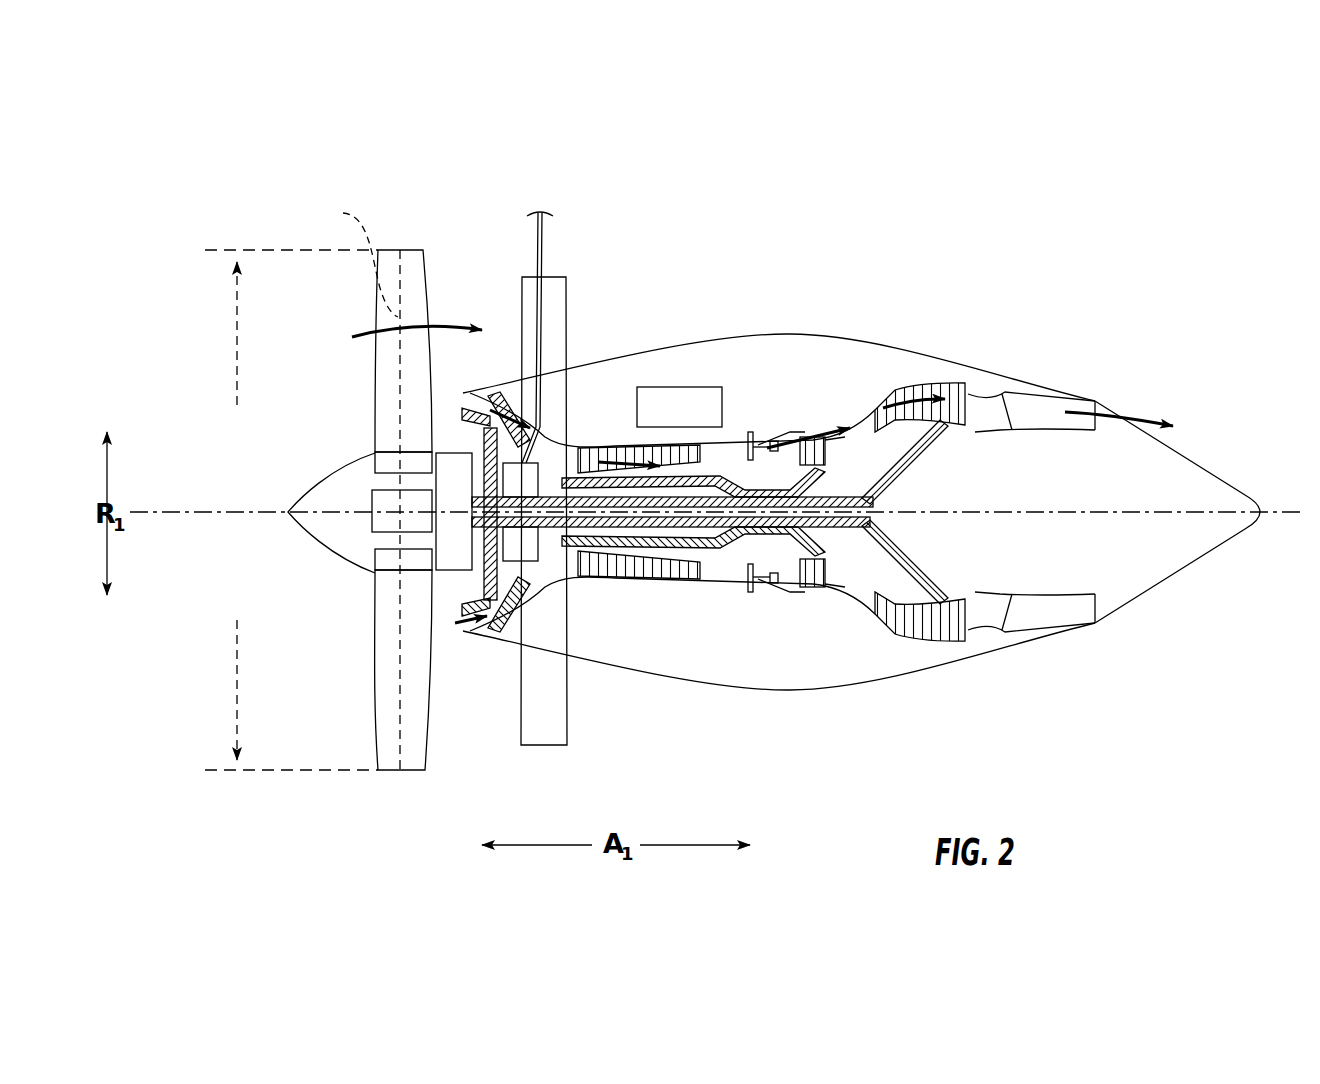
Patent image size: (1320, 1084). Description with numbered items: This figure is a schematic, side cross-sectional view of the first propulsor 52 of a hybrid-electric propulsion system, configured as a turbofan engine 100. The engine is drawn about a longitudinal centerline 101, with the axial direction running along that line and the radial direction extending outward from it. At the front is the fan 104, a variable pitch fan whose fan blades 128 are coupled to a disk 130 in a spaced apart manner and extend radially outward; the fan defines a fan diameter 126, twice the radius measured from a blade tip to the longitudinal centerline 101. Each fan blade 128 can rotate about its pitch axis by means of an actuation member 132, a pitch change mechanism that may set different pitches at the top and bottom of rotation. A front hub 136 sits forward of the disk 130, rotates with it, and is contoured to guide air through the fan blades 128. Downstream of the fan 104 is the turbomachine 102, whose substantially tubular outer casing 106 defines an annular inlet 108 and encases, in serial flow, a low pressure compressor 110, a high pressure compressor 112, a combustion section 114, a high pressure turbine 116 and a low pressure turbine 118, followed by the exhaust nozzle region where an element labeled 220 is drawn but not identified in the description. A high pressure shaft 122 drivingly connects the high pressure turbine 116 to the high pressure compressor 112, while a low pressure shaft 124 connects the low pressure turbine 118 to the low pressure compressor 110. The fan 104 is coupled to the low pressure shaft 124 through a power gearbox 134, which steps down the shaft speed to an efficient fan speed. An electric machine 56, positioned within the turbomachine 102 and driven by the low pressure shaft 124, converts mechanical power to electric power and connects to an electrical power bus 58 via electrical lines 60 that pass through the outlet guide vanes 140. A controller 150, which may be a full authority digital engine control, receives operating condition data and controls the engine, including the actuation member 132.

The turbofan engine 100 is at (968, 272).
The first propulsor 52 is at (779, 488).
The electric machine 56 is at (528, 548).
The electrical power bus 58 is at (518, 222).
The electrical lines 60 is at (543, 248).
The longitudinal centerline 101 is at (1035, 512).
The turbomachine 102 is at (683, 338).
The fan 104 is at (312, 360).
The outer casing 106 is at (727, 675).
The annular inlet 108 is at (484, 618).
The low pressure compressor 110 is at (505, 622).
The high pressure compressor 112 is at (597, 568).
The combustion section 114 is at (770, 578).
The high pressure turbine 116 is at (830, 577).
The low pressure turbine 118 is at (955, 642).
The high pressure shaft 122 is at (765, 487).
The low pressure shaft 124 is at (845, 500).
The fan diameter 126 is at (235, 335).
The fan blades 128 is at (375, 658).
The disk 130 is at (390, 462).
The actuation member 132 is at (378, 505).
The power gearbox 134 is at (443, 450).
The front hub 136 is at (310, 535).
The outlet guide vanes 140 is at (567, 310).
The controller 150 is at (710, 388).
The exhaust nozzle flap 220 is at (1015, 620).